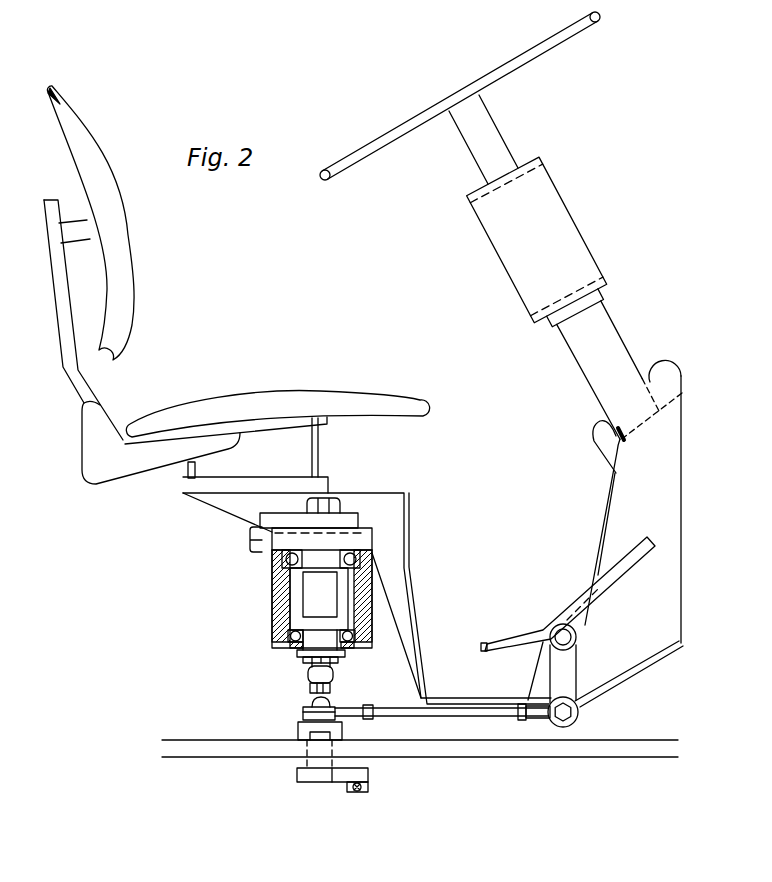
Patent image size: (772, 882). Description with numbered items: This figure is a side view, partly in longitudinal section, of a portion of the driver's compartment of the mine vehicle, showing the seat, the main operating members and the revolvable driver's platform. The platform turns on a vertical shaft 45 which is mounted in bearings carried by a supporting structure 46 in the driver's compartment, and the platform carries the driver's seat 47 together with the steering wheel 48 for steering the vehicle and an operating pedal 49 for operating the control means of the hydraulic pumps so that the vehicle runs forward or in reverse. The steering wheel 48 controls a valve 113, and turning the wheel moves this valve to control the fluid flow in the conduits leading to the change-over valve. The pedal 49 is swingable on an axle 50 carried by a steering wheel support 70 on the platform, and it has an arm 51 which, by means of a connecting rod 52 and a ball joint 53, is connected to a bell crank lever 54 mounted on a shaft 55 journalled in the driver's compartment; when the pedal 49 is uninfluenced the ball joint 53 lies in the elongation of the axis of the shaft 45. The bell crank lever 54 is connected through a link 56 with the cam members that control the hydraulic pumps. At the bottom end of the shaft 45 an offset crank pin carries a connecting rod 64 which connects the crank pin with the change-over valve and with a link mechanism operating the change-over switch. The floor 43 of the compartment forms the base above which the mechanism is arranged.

The floor 43 is at (188, 740).
The vertical shaft 45 is at (317, 592).
The supporting structure 46 is at (277, 572).
The driver's seat 47 is at (242, 398).
The steering wheel 48 is at (378, 148).
The operating pedal 49 is at (633, 553).
The axle 50 is at (571, 639).
The arm 51 is at (566, 687).
The connecting rod 52 is at (443, 716).
The ball joint 53 is at (325, 713).
The bell crank lever 54 is at (340, 775).
The shaft 55 is at (322, 762).
The link 56 is at (363, 792).
The connecting rod 64 is at (307, 673).
The steering wheel support 70 is at (625, 396).
The valve 113 is at (580, 258).